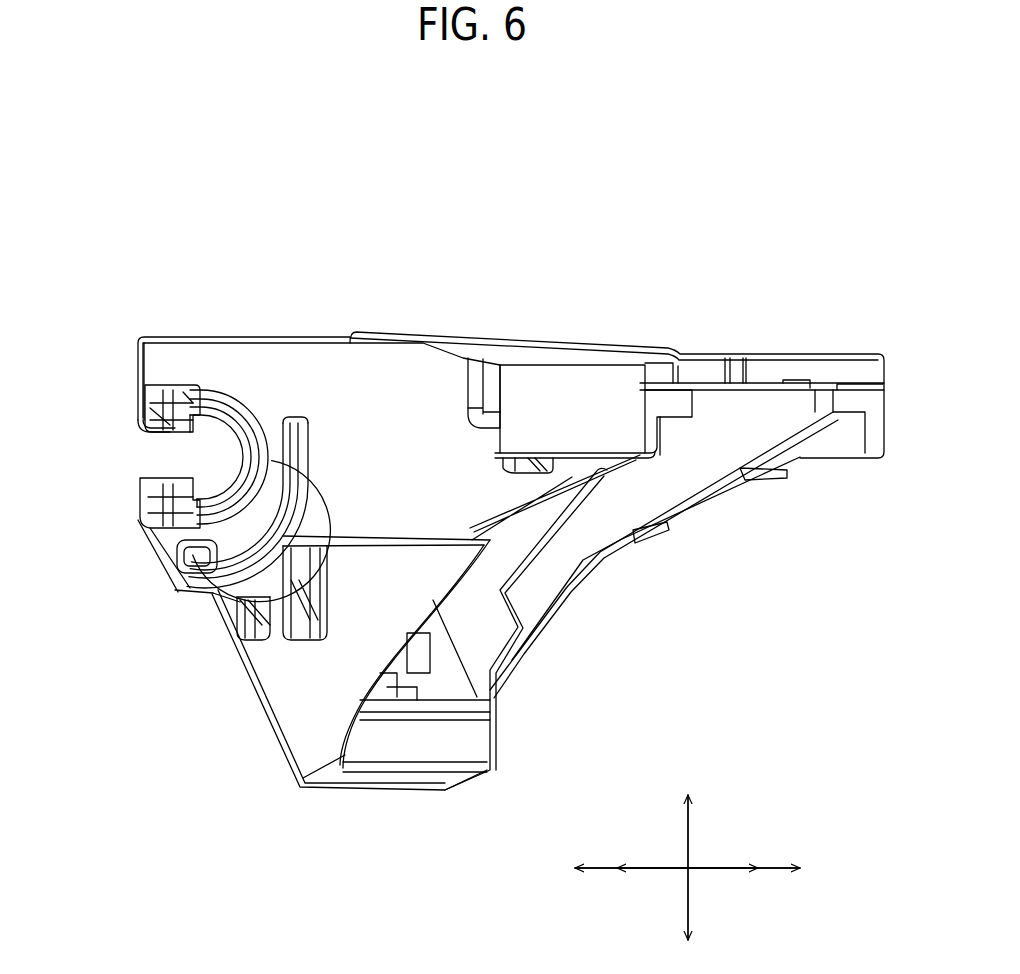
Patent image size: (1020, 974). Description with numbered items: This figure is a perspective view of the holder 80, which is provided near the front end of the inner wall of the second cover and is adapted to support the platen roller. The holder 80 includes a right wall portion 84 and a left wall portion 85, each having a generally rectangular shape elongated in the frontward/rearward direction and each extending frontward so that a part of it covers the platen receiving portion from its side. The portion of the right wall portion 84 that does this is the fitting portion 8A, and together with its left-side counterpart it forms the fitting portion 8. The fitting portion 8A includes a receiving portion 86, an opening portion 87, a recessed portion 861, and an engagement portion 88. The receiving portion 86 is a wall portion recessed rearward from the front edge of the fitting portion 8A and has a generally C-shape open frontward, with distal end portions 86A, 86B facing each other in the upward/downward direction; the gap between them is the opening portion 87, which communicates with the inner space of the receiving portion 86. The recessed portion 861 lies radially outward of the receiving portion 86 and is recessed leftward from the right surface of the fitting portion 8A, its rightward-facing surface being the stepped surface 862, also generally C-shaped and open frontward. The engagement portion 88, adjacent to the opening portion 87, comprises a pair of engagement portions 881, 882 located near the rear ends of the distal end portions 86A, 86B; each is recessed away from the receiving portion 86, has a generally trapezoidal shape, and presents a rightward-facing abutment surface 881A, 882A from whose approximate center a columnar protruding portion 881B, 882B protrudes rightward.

The holder 80 is at (522, 216).
The fitting portion 8 is at (210, 349).
The fitting portion 8A is at (223, 372).
The engagement portion 88 is at (276, 473).
The engagement portion 881 is at (183, 383).
The abutment surface 881A is at (165, 440).
The protruding portion 881B is at (153, 405).
The engagement portion 882 is at (160, 557).
The abutment surface 882A is at (142, 477).
The protruding portion 882B is at (144, 527).
The receiving portion 86 is at (232, 441).
The distal end portion 86A is at (158, 422).
The distal end portion 86B is at (134, 506).
The opening portion 87 is at (150, 460).
The recessed portion 861 is at (248, 430).
The stepped surface 862 is at (240, 497).
The right wall portion 84 is at (399, 398).
The left wall portion 85 is at (688, 458).